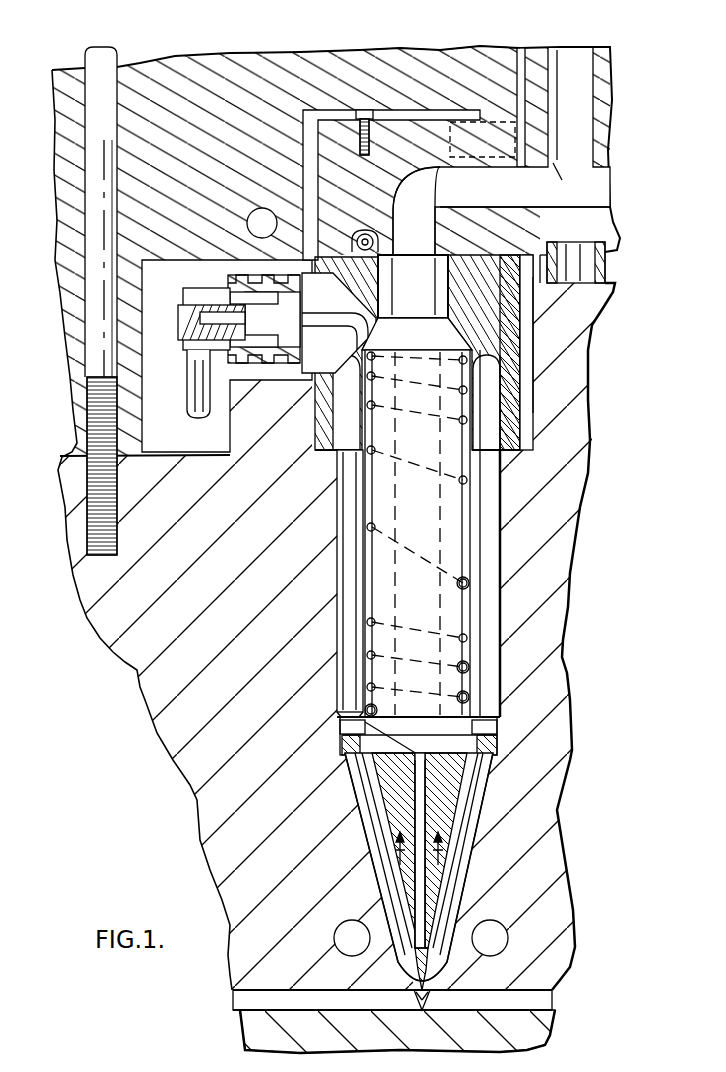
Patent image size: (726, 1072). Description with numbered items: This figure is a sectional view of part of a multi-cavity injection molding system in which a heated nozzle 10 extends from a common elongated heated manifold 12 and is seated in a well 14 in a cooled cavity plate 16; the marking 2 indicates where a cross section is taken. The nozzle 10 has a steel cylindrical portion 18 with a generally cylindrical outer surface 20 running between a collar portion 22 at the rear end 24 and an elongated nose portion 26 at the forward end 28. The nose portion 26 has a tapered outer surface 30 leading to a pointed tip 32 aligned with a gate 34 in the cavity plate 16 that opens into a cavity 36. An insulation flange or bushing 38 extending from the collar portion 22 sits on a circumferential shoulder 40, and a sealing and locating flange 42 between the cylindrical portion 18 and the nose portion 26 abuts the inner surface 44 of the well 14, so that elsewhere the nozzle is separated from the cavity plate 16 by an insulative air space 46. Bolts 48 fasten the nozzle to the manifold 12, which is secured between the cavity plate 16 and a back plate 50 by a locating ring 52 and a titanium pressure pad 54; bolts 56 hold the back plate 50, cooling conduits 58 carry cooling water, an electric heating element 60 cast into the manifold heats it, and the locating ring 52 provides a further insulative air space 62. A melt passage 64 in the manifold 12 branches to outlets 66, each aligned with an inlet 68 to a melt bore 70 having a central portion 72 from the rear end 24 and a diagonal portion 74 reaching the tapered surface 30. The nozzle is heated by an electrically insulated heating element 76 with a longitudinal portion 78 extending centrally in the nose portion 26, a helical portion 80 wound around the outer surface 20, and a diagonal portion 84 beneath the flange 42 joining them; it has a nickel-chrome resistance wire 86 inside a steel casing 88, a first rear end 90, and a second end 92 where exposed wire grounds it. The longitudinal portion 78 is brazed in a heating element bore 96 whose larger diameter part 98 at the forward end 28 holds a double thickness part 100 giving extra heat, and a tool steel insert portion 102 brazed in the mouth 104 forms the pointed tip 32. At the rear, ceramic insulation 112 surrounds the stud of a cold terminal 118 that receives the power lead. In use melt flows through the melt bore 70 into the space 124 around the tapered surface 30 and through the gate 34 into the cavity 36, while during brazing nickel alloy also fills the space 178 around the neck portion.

The section line 2 is at (417, 849).
The heated nozzle 10 is at (500, 598).
The heated manifold 12 is at (607, 115).
The well 14 is at (498, 555).
The cavity plate 16 is at (552, 885).
The cylindrical portion 18 is at (475, 500).
The outer surface 20 is at (481, 525).
The collar portion 22 is at (515, 350).
The rear end 24 is at (528, 262).
The nose portion 26 is at (468, 872).
The forward end 28 is at (440, 1002).
The tapered outer surface 30 is at (447, 900).
The pointed tip 32 is at (418, 1000).
The gate 34 is at (428, 1000).
The cavity 36 is at (560, 995).
The insulation flange or bushing 38 is at (522, 392).
The circumferential shoulder 40 is at (512, 428).
The sealing and locating flange 42 is at (498, 740).
The inner surface 44 is at (482, 775).
The insulative air space 46 is at (517, 623).
The bolts 48 is at (537, 300).
The top clamp plate 50 is at (430, 70).
The locating ring 52 is at (607, 262).
The titanium pressure pad 54 is at (452, 115).
The bolts 56 is at (112, 62).
The cooling conduits 58 is at (257, 220).
The electric heating element 60 is at (363, 232).
The insulative air space 62 is at (556, 255).
The melt passage 64 is at (605, 195).
The outlets 66 is at (413, 286).
The inlet 68 is at (398, 240).
The melt bore 70 is at (440, 562).
The central portion 72 is at (475, 640).
The diagonal portion 74 is at (462, 760).
The electrically insulated heating element 76 is at (470, 610).
The longitudinal portion 78 is at (448, 838).
The helical portion 80 is at (470, 665).
The diagonal portion 84 is at (360, 755).
The nickel-chrome resistance wire 86 is at (262, 278).
The steel casing 88 is at (480, 707).
The first rear end 90 is at (353, 340).
The second end 92 is at (445, 815).
The heating element bore 96 is at (370, 808).
The larger diameter part 98 is at (407, 910).
The double thickness part 100 is at (403, 890).
The air-hard tool steel insert portion 102 is at (405, 995).
The mouth 104 is at (440, 977).
The ceramic insulation 112 is at (246, 365).
The cold terminal 118 is at (178, 322).
The space 124 is at (556, 888).
The space 178 is at (368, 340).